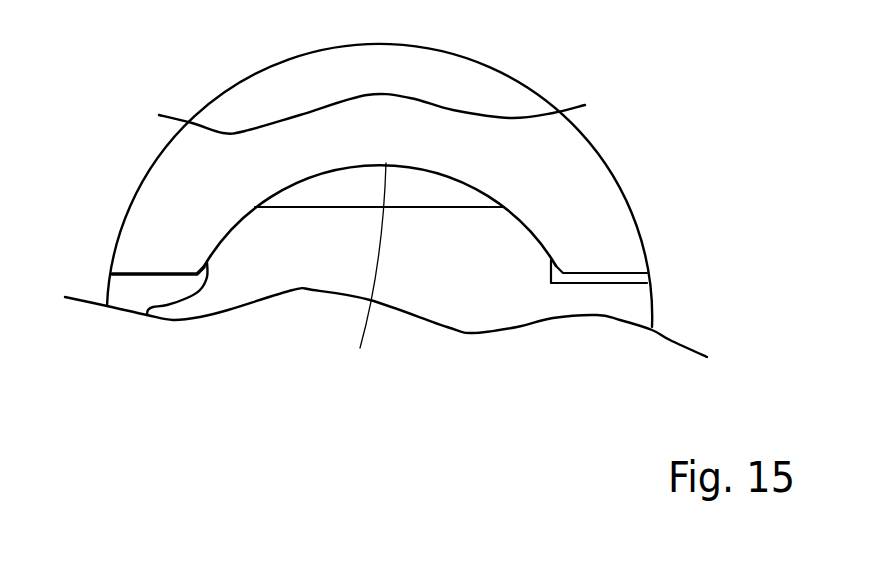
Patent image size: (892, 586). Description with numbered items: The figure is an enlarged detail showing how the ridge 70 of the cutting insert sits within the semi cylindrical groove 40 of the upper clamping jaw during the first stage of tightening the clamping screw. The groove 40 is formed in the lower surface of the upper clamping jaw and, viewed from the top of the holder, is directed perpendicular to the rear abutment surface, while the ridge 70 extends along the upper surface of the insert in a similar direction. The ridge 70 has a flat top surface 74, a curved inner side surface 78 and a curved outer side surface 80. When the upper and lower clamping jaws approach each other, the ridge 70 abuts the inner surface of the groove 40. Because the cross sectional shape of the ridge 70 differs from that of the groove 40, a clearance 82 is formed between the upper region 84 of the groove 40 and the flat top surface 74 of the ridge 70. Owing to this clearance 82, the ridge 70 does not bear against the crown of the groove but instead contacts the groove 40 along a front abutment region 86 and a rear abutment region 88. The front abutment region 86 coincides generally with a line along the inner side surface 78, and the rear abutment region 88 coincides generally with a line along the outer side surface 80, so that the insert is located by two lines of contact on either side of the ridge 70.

The semi cylindrical groove 40 is at (541, 277).
The ridge 70 is at (437, 182).
The flat top surface 74 is at (288, 207).
The inner side surface 78 is at (552, 258).
The outer side surface 80 is at (253, 205).
The clearance 82 is at (347, 160).
The upper region 84 is at (361, 275).
The front abutment region 86 is at (532, 227).
The rear abutment region 88 is at (217, 237).